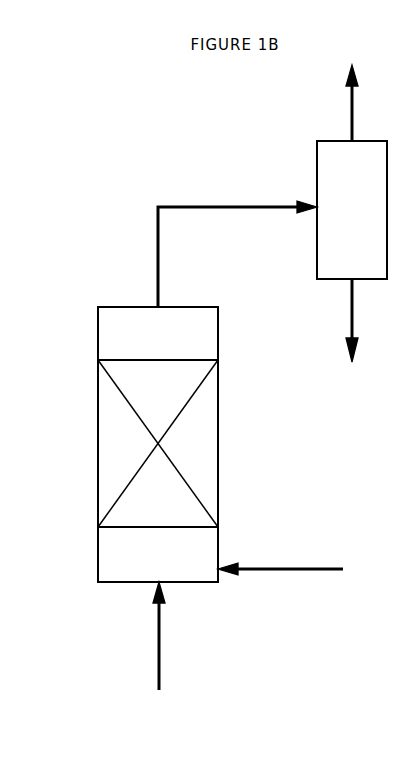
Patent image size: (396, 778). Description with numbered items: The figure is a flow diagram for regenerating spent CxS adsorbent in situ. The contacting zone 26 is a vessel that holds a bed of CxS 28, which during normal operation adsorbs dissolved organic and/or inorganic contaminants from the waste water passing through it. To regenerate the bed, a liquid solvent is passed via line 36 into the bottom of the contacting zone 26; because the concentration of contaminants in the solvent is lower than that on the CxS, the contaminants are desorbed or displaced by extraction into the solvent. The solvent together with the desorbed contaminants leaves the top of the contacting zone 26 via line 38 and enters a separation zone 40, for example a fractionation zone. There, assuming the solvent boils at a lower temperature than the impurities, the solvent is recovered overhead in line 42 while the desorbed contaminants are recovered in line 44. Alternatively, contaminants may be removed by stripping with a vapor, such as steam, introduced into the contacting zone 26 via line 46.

The contacting zone 26 is at (210, 307).
The bed of CxS 28 is at (210, 423).
The line 36 is at (162, 660).
The line 38 is at (238, 206).
The separation zone 40 is at (352, 210).
The line 42 is at (350, 120).
The line 44 is at (355, 304).
The line 46 is at (258, 569).